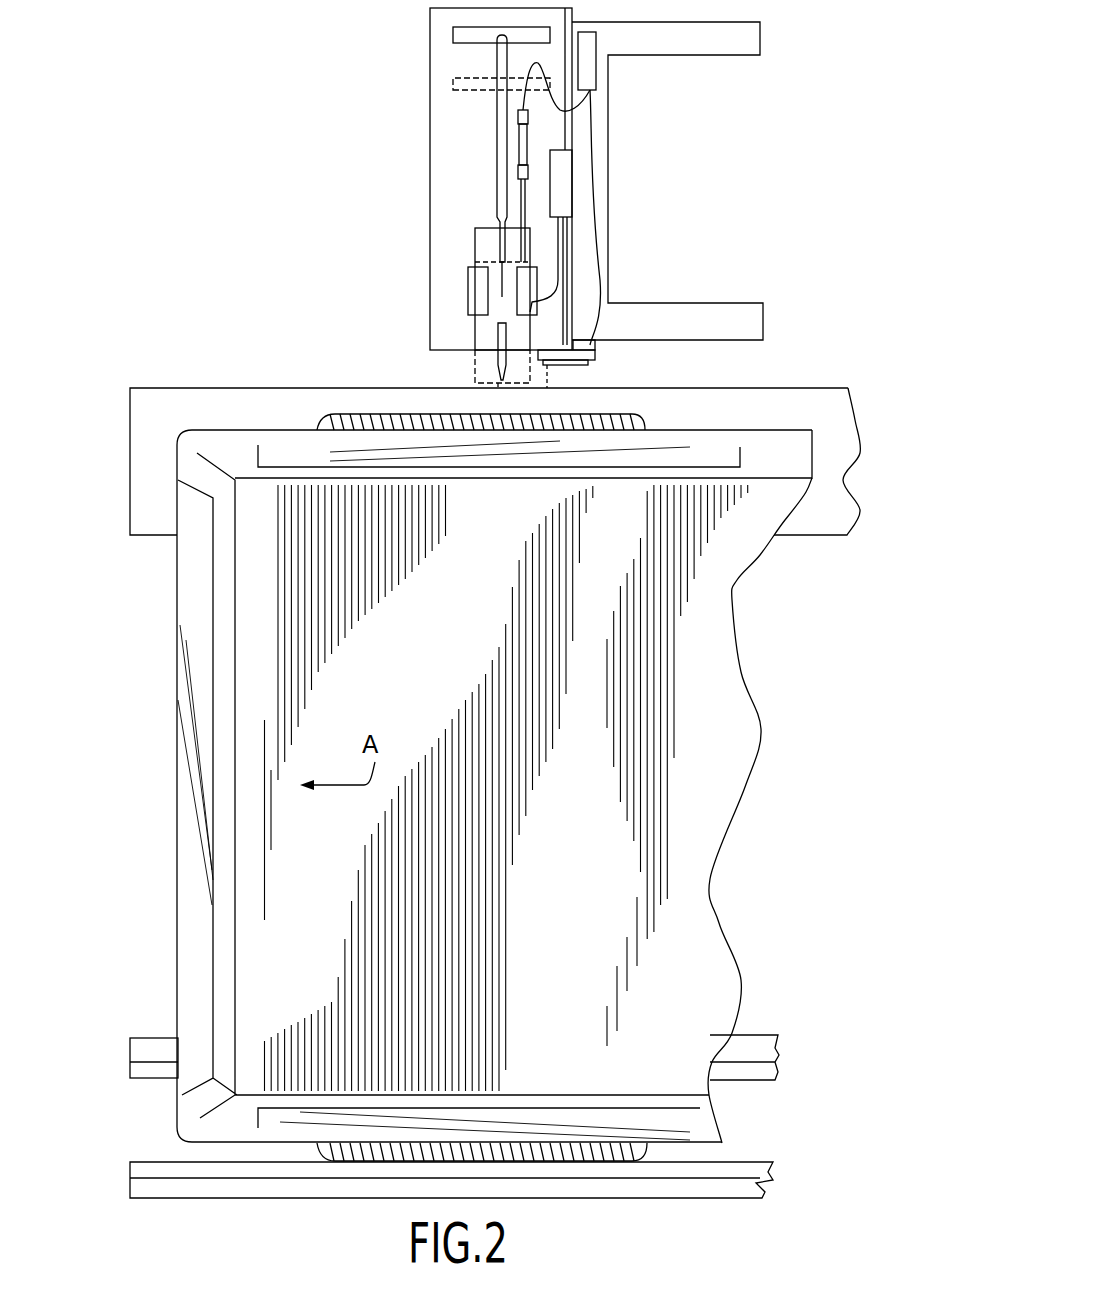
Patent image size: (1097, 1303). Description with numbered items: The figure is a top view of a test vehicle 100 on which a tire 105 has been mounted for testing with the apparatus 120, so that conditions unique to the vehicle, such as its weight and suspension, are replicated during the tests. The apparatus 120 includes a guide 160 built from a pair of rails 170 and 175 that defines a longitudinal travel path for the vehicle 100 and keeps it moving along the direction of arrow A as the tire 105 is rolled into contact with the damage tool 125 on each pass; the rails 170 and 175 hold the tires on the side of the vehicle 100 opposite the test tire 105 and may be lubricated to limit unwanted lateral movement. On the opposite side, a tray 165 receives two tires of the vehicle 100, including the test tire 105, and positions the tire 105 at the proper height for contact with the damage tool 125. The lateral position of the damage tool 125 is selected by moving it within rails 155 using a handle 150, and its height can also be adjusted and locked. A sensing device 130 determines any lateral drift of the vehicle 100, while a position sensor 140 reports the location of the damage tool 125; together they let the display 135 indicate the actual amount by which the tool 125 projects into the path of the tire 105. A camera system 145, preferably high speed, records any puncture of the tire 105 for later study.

The test vehicle 100 is at (700, 890).
The tire 105 is at (613, 412).
The apparatus 120 is at (668, 210).
The damage tool 125 is at (498, 372).
The sensing device 130 is at (548, 368).
The display 135 is at (596, 84).
The position sensor 140 is at (520, 157).
The camera system 145 is at (566, 178).
The handle 150 is at (498, 60).
The rails 155 is at (515, 313).
The guide 160 is at (124, 1107).
The tray 165 is at (145, 380).
The rail 170 is at (757, 1186).
The rail 175 is at (761, 1055).